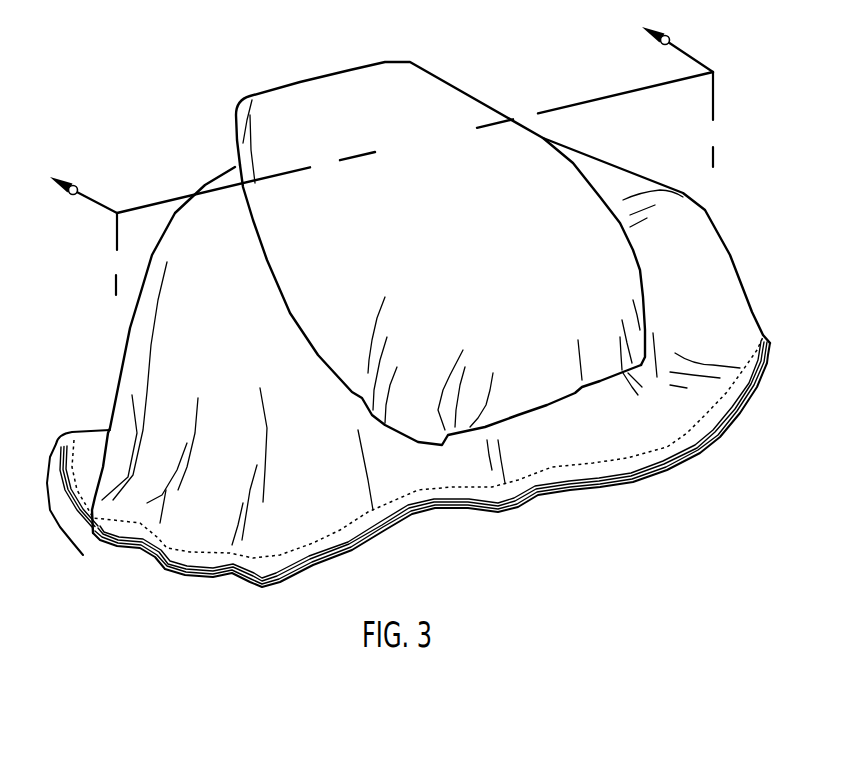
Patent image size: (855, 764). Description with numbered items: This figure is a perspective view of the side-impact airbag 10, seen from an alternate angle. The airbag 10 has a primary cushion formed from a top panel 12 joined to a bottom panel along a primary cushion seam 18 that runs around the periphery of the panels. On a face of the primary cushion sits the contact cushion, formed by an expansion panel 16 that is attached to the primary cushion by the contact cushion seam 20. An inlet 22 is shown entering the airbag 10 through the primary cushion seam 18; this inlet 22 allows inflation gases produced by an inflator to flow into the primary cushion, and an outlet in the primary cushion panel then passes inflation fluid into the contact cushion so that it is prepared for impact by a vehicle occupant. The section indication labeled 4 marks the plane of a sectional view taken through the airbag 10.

The airbag 10 is at (203, 154).
The top panel 12 is at (168, 372).
The expansion panel 16 is at (438, 98).
The primary cushion seam 18 is at (597, 487).
The contact cushion seam 20 is at (703, 253).
The inlet 22 is at (73, 533).
The section line 4- 4 is at (384, 161).